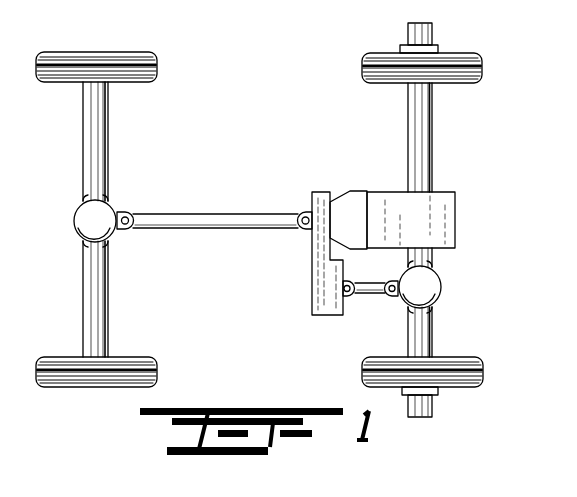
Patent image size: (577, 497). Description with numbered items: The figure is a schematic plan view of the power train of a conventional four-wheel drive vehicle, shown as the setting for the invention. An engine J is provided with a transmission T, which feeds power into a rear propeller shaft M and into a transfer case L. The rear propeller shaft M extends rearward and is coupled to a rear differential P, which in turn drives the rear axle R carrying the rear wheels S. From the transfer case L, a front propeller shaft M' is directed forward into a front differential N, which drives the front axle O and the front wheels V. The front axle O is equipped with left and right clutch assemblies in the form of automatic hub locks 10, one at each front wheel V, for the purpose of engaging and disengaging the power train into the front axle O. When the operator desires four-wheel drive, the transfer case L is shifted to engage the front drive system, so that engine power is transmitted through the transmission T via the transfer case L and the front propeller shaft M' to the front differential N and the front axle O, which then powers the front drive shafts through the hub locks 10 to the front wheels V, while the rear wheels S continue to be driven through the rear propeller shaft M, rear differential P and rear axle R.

The rear wheel S is at (99, 29).
The rear axle R is at (107, 158).
The rear differential P is at (82, 218).
The rear propeller shaft M is at (214, 202).
The transfer case L is at (312, 283).
The transmission T is at (349, 201).
The engine J is at (437, 201).
The front axle O is at (432, 140).
The front differential N is at (433, 283).
The front propeller shaft M' is at (370, 307).
The front wheel V is at (452, 55).
The automatic hub lock 10 is at (412, 31).